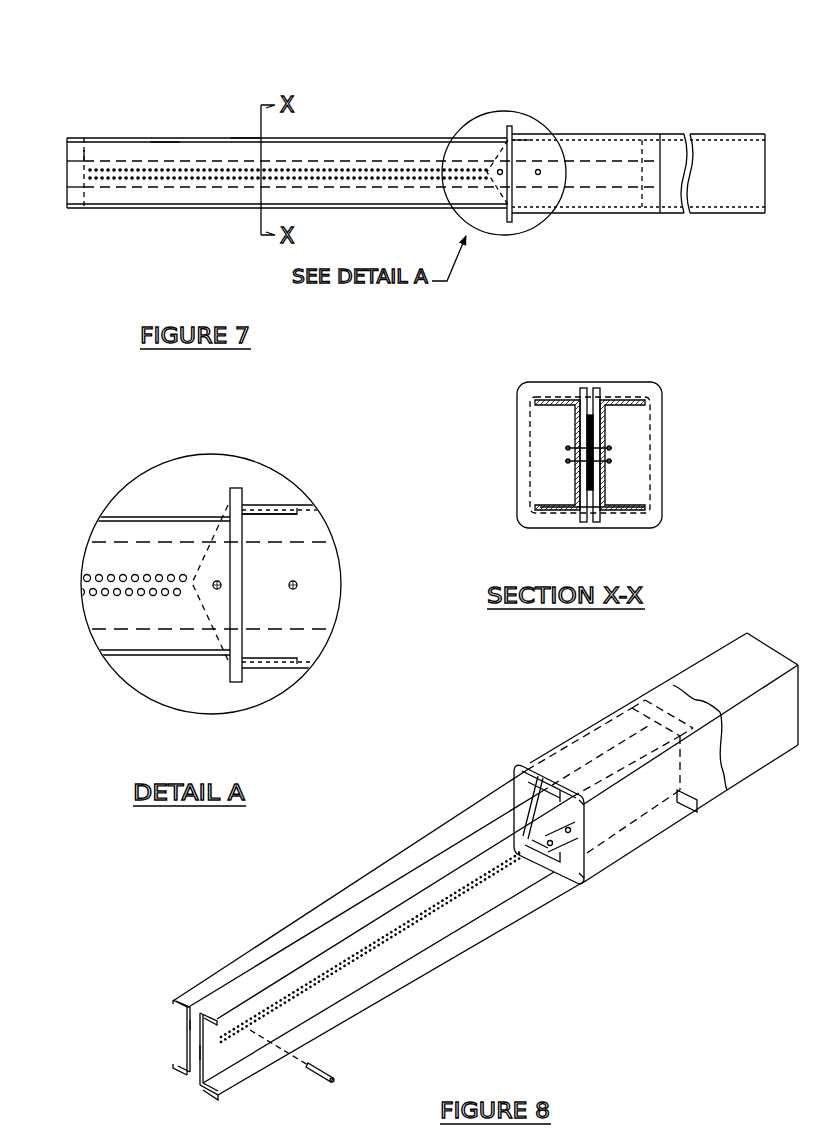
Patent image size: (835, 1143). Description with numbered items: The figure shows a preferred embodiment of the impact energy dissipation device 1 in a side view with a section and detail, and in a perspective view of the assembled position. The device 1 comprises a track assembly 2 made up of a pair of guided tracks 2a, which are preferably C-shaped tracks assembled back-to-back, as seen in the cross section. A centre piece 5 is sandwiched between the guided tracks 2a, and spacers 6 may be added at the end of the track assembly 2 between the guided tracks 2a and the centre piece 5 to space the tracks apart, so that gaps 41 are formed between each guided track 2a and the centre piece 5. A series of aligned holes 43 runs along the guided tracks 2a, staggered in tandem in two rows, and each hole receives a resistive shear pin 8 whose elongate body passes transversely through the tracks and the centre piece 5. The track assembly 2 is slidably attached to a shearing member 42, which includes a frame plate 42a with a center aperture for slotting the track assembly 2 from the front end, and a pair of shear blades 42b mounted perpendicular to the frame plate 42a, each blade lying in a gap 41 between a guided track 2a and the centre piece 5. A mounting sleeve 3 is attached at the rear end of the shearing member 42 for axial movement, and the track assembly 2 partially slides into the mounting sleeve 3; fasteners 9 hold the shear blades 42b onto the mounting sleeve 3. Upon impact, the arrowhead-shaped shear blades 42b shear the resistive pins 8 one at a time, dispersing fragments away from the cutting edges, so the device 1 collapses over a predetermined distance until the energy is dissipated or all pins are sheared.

In FIG. 7, the impact energy dissipation device 1 is at (607, 122).
In FIG. 7, the track assembly 2 is at (121, 216).
In FIG. 8, the track assembly 2 is at (246, 941).
In FIG. 7, the guided tracks 2a is at (242, 138).
In FIG. 8, the guided tracks 2a is at (186, 1008).
In FIG. 7, the mounting sleeve 3 is at (663, 211).
In FIG. 8, the mounting sleeve 3 is at (719, 800).
In FIG. 7, the centre piece 5 is at (165, 138).
In FIG. 8, the centre piece 5 is at (193, 1052).
In FIG. 7, the spacers 6 is at (87, 153).
In FIG. 8, the spacers 6 is at (186, 1024).
In FIG. 7, the resistive shear pins 8 is at (163, 178).
In FIG. 8, the resistive shear pins 8 is at (332, 1080).
In FIG. 7, the fasteners 9 is at (538, 173).
In FIG. 8, the fasteners 9 is at (554, 845).
In FIG. 8, the gap 41 is at (345, 920).
In FIG. 7, the shearing member 42 is at (517, 186).
In FIG. 8, the shearing member 42 is at (577, 884).
In FIG. 7, the frame plate 42a is at (510, 135).
In FIG. 8, the frame plate 42a is at (521, 768).
In FIG. 7, the shear blade 42b is at (488, 170).
In FIG. 8, the shear blade 42b is at (523, 811).
In FIG. 8, the aligned holes 43 is at (407, 927).